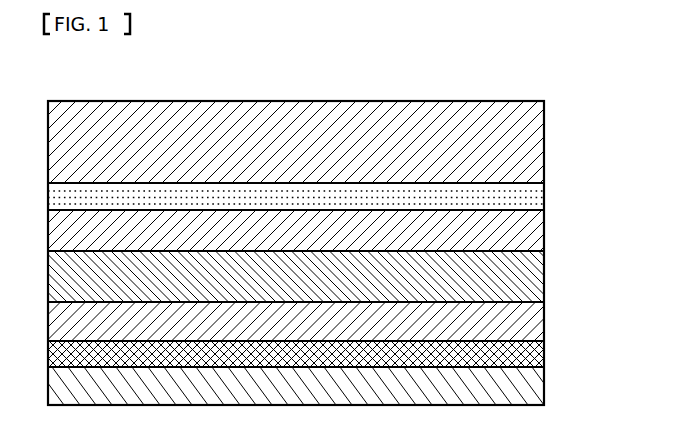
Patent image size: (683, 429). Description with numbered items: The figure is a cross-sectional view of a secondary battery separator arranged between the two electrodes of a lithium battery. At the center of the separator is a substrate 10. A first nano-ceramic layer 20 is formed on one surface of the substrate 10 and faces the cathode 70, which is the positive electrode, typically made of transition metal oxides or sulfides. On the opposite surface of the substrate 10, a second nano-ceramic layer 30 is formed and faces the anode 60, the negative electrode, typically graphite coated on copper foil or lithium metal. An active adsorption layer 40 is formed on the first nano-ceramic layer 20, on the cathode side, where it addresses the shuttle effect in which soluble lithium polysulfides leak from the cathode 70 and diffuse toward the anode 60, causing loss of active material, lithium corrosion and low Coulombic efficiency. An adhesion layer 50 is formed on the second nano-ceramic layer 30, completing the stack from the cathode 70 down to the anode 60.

The substrate 10 is at (544, 273).
The first nano-ceramic layer 20 is at (544, 228).
The second nano-ceramic layer 30 is at (544, 319).
The active adsorption layer 40 is at (544, 195).
The adhesion layer 50 is at (544, 352).
The anode 60 is at (544, 384).
The cathode 70 is at (544, 140).